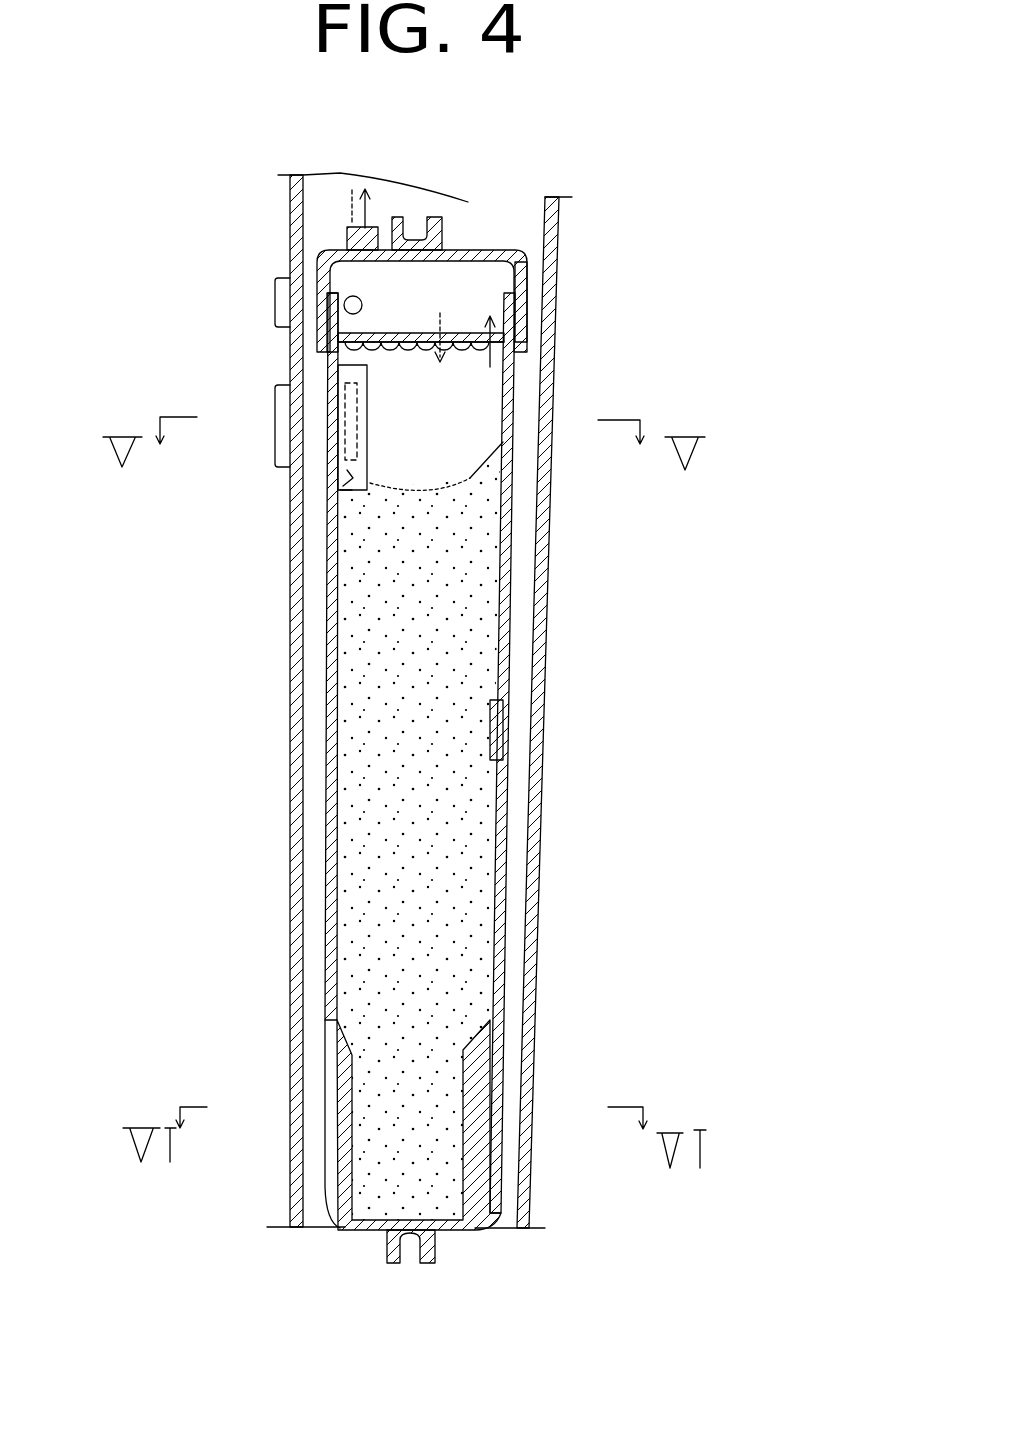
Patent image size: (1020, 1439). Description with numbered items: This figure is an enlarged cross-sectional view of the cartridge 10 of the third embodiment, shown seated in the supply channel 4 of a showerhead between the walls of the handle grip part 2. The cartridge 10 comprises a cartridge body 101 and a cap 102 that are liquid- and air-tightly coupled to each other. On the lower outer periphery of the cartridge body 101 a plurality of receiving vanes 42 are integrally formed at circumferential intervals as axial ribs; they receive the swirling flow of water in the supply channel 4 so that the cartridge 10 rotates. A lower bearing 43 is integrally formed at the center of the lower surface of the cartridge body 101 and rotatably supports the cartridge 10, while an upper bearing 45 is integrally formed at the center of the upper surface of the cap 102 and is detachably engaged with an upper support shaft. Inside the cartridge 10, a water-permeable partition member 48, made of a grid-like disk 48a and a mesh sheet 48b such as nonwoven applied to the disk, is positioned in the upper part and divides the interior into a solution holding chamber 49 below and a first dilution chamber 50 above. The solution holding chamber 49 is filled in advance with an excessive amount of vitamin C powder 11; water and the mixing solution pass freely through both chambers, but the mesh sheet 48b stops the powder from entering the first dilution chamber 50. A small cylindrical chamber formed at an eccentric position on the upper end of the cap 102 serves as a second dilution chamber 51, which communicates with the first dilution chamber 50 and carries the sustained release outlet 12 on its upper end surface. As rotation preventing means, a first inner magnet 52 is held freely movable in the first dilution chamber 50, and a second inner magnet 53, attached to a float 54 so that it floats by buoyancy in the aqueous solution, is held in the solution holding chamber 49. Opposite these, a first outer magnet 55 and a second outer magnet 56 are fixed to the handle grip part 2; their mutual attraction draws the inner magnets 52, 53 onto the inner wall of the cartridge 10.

The handle grip part 2 is at (548, 562).
The supply channel 4 is at (310, 718).
The cartridge 10 is at (417, 760).
The vitamin C powder 11 is at (440, 938).
The sustained release outlet 12 is at (352, 221).
The receiving vanes 42 is at (480, 1148).
The lower bearing 43 is at (440, 1258).
The upper bearing 45 is at (448, 215).
The partition member 48 is at (564, 340).
The grid-like disk 48a is at (480, 337).
The mesh sheet 48b is at (472, 345).
The solution holding chamber 49 is at (457, 862).
The first dilution chamber 50 is at (473, 277).
The second dilution chamber 51 is at (347, 242).
The first inner magnet 52 is at (327, 325).
The second inner magnet 53 is at (340, 448).
The float 54 is at (352, 490).
The first outer magnet 55 is at (275, 298).
The second outer magnet 56 is at (280, 447).
The cartridge body 101 is at (503, 730).
The cap 102 is at (527, 273).